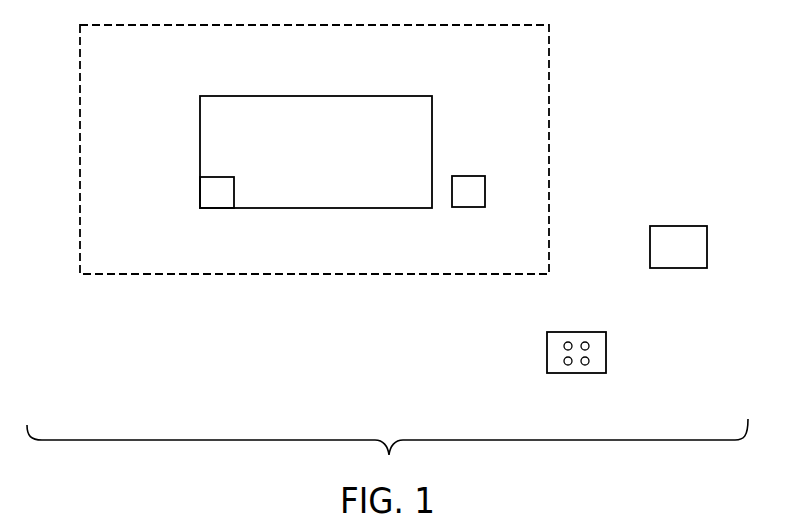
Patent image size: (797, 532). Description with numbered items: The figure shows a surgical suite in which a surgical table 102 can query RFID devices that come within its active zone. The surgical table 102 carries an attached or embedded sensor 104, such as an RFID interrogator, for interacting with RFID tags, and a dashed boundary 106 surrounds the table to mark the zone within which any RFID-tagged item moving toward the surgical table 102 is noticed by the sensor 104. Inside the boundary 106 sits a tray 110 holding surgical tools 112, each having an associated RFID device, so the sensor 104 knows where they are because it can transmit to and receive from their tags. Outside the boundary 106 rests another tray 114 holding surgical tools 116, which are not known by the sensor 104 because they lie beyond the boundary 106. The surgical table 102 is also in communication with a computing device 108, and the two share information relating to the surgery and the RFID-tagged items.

The surgical table 102 is at (200, 137).
The sensor 104 is at (207, 193).
The boundary 106 is at (77, 73).
The computing device 108 is at (707, 245).
The tray 110 is at (485, 183).
The surgical tools 112 is at (470, 200).
The tray 114 is at (606, 338).
The surgical tools 116 is at (577, 366).